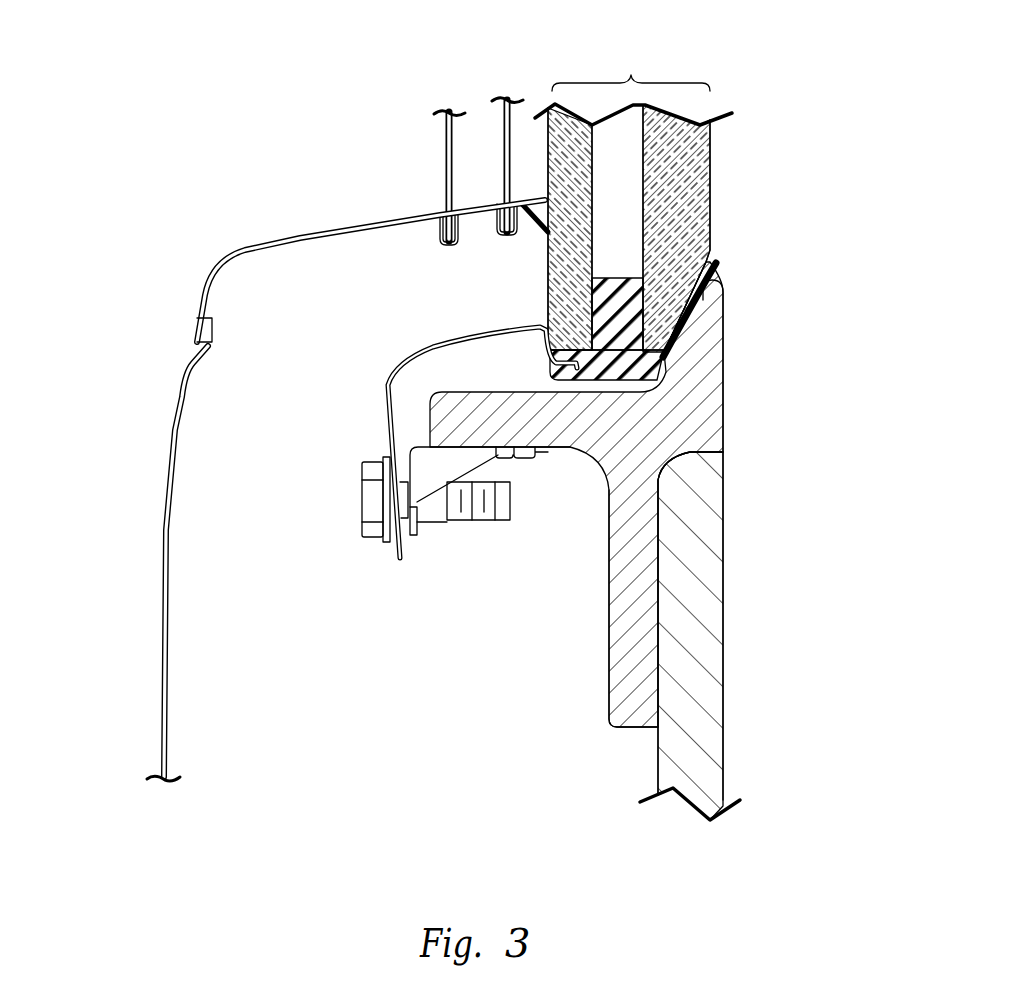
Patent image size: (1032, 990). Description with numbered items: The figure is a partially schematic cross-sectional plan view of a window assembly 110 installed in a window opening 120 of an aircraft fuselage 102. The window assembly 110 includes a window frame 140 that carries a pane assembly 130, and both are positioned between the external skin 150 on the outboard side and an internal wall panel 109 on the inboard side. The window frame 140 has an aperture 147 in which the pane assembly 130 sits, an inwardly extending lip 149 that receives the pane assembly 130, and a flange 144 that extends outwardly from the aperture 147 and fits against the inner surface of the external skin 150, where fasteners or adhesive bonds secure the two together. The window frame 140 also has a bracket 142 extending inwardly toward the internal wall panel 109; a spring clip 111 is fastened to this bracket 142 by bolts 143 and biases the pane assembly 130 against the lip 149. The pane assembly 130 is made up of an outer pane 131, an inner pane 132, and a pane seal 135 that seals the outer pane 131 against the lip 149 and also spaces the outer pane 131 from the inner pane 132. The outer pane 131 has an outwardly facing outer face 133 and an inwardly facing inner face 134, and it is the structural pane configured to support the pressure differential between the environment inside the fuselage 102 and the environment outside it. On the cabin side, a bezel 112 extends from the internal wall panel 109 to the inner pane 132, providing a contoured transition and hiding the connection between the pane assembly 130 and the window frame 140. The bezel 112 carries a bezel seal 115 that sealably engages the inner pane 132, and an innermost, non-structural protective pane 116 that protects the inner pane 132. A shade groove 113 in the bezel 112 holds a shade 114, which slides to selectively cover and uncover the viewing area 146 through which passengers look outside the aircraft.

The fuselage 102 is at (416, 731).
The internal wall panel 109 is at (164, 492).
The window assembly 110 is at (745, 140).
The spring clip 111 is at (388, 382).
The bezel 112 is at (247, 246).
The shade groove 113 is at (444, 246).
The shade 114 is at (445, 162).
The bezel seal 115 is at (548, 193).
The protective pane 116 is at (498, 200).
The window opening 120 is at (735, 272).
The pane assembly 130 is at (631, 75).
The outer pane 131 is at (675, 288).
The inner pane 132 is at (560, 266).
The outer face 133 is at (712, 228).
The inner face 134 is at (641, 212).
The pane seal 135 is at (628, 338).
The window frame 140 is at (696, 428).
The bracket 142 is at (521, 458).
The bolts 143 is at (368, 500).
The flange 144 is at (618, 641).
The viewing area 146 is at (714, 197).
The aperture 147 is at (735, 75).
The lip 149 is at (712, 343).
The external skin 150 is at (700, 636).